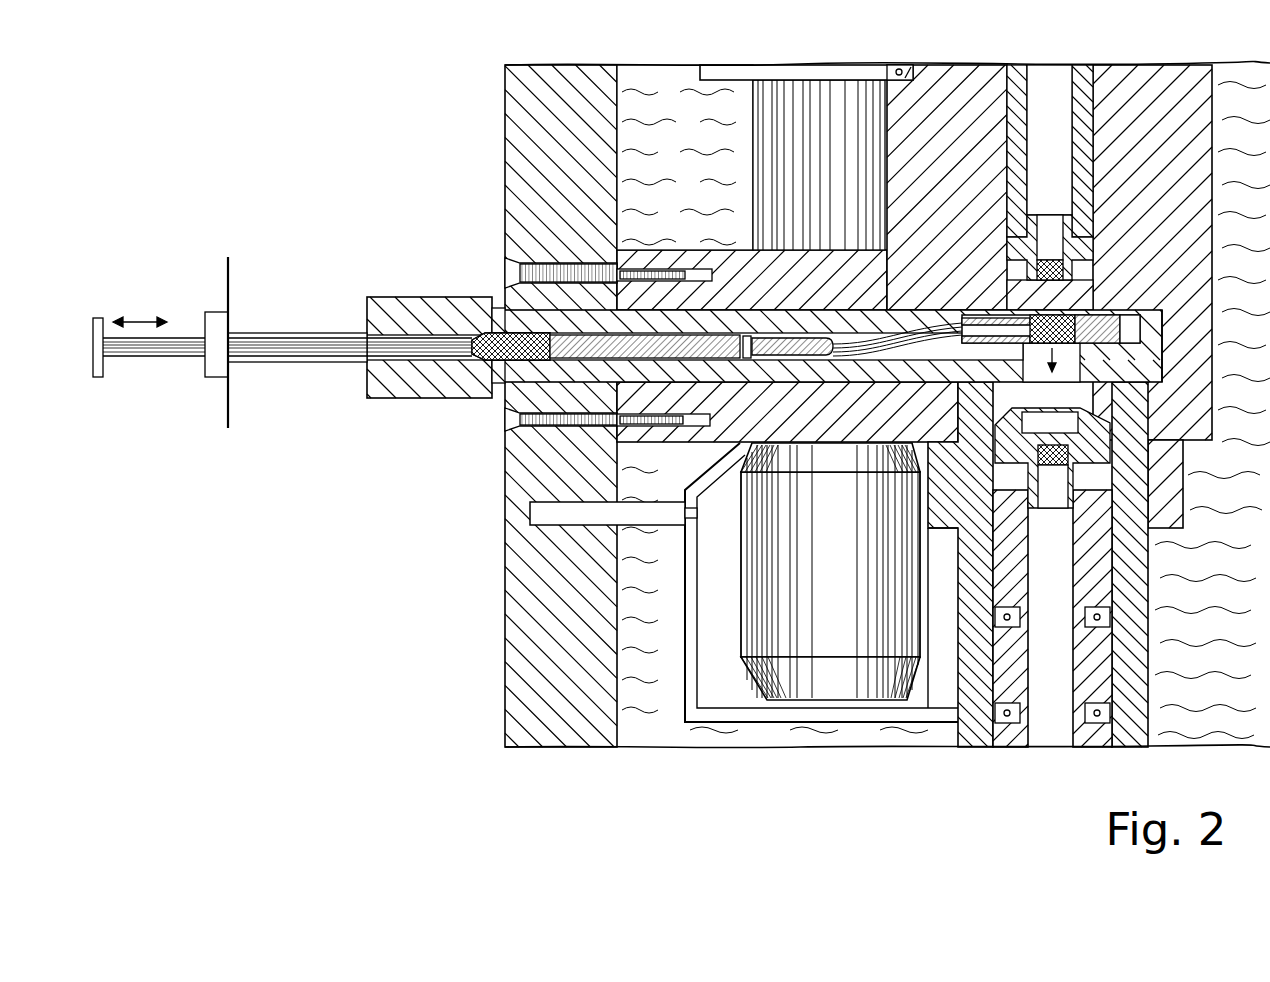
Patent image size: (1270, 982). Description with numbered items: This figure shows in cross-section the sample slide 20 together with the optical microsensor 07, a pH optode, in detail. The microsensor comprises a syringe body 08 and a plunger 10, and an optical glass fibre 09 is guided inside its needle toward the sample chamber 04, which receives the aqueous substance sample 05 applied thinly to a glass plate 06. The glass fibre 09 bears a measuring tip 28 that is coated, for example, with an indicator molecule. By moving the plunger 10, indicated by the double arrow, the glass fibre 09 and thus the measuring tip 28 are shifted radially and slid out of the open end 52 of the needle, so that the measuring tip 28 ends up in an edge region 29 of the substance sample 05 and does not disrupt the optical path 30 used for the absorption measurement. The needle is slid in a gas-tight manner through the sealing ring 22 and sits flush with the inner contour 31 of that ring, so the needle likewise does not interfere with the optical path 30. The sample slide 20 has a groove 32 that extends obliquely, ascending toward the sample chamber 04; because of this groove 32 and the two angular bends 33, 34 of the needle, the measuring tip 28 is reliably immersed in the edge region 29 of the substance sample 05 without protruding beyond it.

The sample chamber 04 is at (1110, 305).
The substance sample 05 is at (1162, 362).
The glass plate 06 is at (1160, 342).
The optical microsensor 07 is at (425, 220).
The syringe body 08 is at (297, 333).
The glass fibre 09 is at (897, 320).
The plunger 10 is at (317, 347).
The sample slide 20 is at (410, 380).
The sealing ring 22 is at (972, 318).
The measuring tip 28 is at (1032, 310).
The edge region 29 is at (1047, 383).
The optical path 30 is at (1070, 325).
The inner contour 31 is at (990, 355).
The groove 32 is at (857, 312).
The angular bend 33 is at (910, 362).
The angular bend 34 is at (935, 326).
The open end 52 is at (1000, 318).